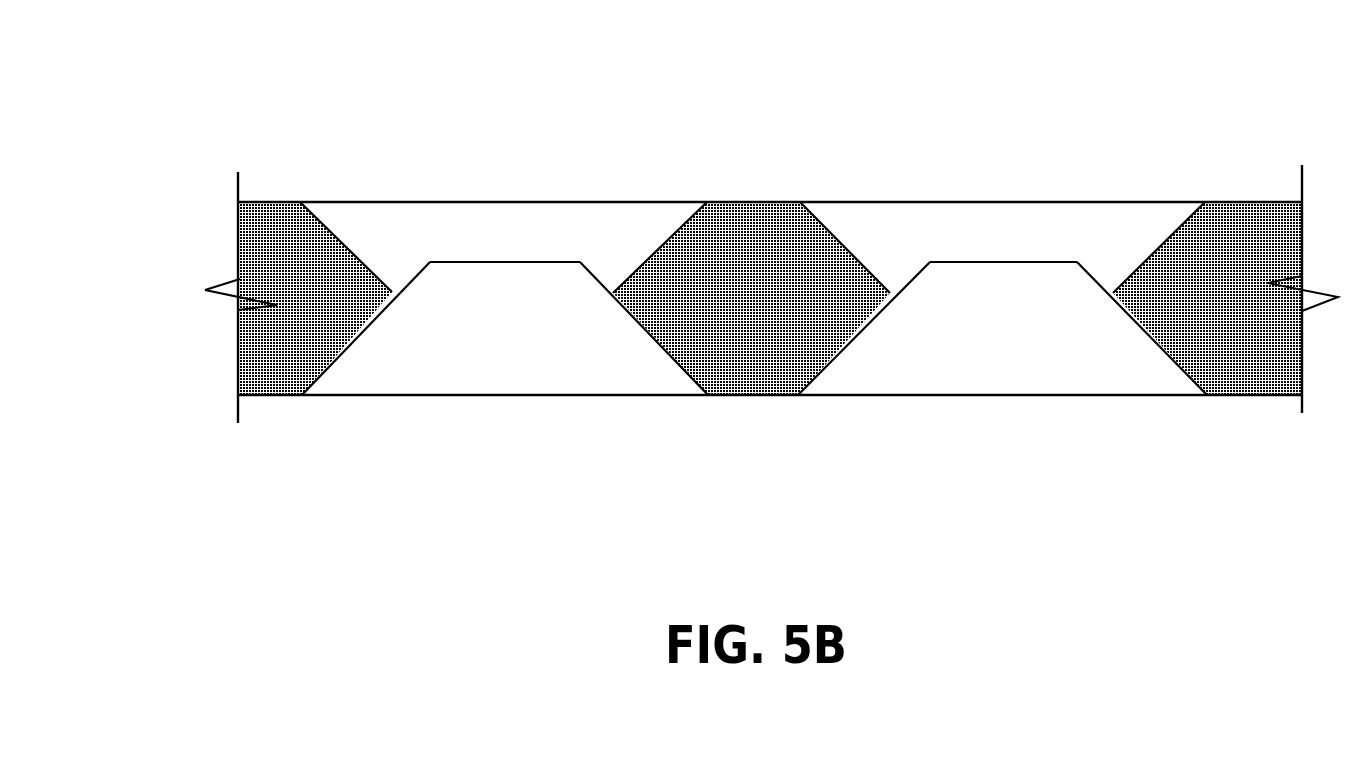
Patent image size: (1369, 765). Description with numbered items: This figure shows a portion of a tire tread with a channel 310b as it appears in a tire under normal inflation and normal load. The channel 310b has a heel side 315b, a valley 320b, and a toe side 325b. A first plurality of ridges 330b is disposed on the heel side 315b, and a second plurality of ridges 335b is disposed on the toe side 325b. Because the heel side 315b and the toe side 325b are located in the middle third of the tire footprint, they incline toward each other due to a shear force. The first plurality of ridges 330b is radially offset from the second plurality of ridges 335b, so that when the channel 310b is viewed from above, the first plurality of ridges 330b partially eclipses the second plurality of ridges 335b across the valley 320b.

The channel 310b is at (225, 233).
The heel side 315b is at (272, 398).
The valley 320b is at (747, 212).
The toe side 325b is at (248, 197).
The first plurality of ridges 330b is at (522, 367).
The second plurality of ridges 335b is at (483, 215).